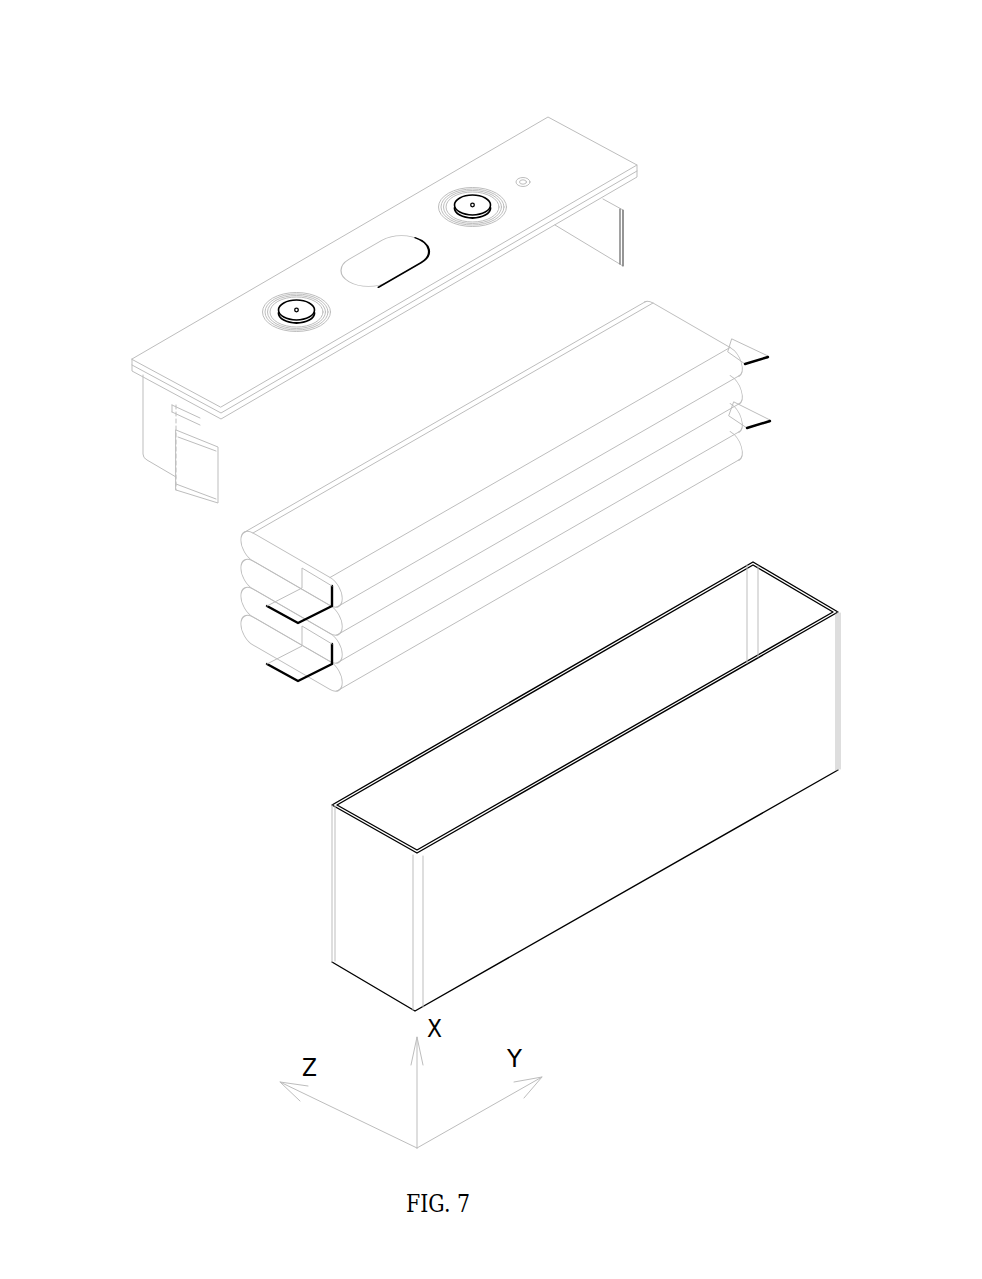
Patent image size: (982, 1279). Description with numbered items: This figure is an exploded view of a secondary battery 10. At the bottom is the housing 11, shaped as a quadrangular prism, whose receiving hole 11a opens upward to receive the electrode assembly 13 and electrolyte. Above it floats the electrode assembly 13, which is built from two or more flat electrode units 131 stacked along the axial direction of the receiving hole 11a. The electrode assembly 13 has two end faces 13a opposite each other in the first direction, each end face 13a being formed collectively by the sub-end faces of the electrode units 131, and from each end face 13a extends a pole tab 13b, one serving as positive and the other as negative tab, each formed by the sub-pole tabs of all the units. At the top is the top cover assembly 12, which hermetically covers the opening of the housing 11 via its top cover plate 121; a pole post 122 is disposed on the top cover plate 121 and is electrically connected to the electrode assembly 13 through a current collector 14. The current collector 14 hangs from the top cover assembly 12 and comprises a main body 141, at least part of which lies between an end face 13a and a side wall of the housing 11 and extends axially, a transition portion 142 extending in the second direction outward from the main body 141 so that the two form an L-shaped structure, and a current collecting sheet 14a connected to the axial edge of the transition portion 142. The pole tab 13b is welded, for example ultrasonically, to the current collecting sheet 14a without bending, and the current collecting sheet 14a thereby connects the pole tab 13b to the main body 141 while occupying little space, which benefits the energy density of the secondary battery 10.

The secondary battery 10 is at (548, 42).
The housing 11 is at (523, 786).
The receiving hole 11a is at (455, 780).
The top cover assembly 12 is at (384, 258).
The top cover plate 121 is at (200, 340).
The pole post 122 is at (470, 203).
The electrode assembly 13 is at (495, 486).
The electrode unit 131 is at (612, 433).
The end face 13a is at (672, 323).
The pole tab 13b is at (745, 352).
The current collector 14 is at (326, 368).
The main body 141 is at (153, 443).
The transition portion 142 is at (200, 474).
The current collecting sheet 14a is at (192, 497).